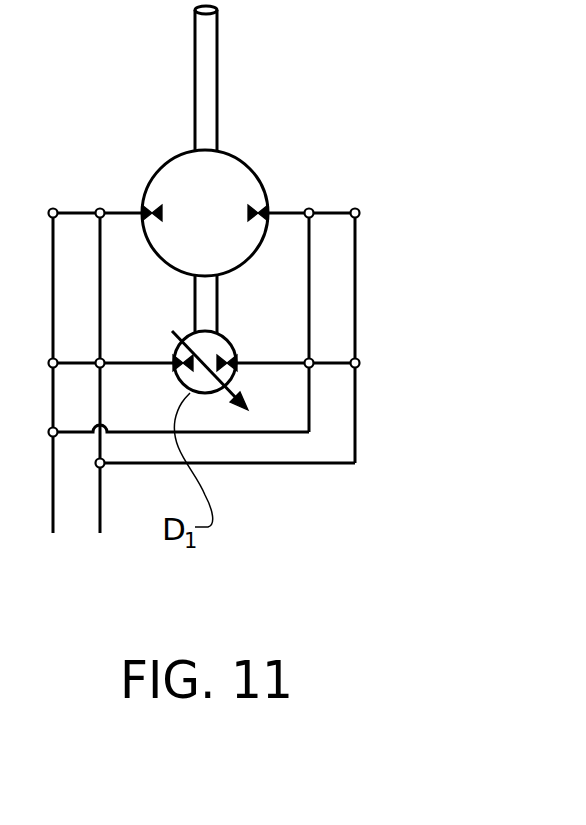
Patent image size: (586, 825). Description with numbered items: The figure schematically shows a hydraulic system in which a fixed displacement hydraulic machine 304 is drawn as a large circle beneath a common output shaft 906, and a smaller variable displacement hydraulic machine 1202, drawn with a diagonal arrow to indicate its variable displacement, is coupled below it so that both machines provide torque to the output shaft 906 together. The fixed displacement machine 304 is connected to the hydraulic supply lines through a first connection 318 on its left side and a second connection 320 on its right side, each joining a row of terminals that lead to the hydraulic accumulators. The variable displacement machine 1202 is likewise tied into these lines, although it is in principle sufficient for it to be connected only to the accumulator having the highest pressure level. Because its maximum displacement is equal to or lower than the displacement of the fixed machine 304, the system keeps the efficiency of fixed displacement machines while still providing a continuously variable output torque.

The common output shaft 906 is at (207, 69).
The second device D2 304 is at (251, 156).
The first terminal of D2 318 is at (137, 209).
The second terminal of D2 320 is at (272, 211).
The variable displacement hydraulic machine 1202 is at (232, 340).